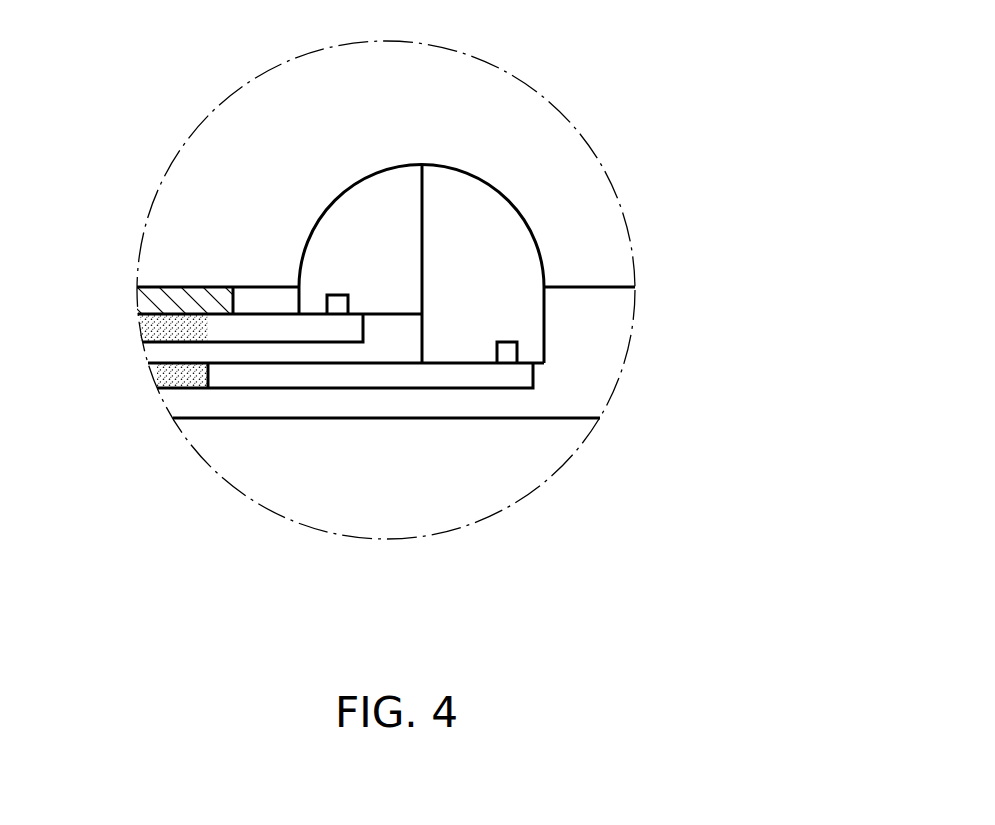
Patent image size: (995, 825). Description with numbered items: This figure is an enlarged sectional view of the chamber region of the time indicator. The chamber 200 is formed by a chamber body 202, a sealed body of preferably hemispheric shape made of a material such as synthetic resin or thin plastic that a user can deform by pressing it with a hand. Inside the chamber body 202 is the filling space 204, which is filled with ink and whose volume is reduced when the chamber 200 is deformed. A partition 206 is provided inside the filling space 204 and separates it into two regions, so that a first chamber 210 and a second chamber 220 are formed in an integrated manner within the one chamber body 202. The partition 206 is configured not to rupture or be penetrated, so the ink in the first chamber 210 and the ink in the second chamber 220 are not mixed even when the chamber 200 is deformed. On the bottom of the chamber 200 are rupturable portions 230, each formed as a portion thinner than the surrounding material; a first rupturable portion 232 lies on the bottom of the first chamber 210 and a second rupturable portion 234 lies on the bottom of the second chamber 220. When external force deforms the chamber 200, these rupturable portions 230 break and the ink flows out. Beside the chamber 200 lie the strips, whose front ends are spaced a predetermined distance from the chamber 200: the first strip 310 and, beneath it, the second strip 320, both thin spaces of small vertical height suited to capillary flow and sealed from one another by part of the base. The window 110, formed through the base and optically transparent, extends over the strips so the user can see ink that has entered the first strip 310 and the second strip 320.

The window 110 is at (173, 287).
The chamber 200 is at (504, 186).
The chamber body 202 is at (537, 232).
The filling space 204 is at (490, 235).
The partition 206 is at (424, 202).
The first chamber 210 is at (358, 208).
The second chamber 220 is at (517, 265).
The rupturable portions 230 is at (402, 477).
The first rupturable portion 232 is at (335, 307).
The second rupturable portion 234 is at (508, 352).
The first strip 310 is at (192, 328).
The second strip 320 is at (177, 377).